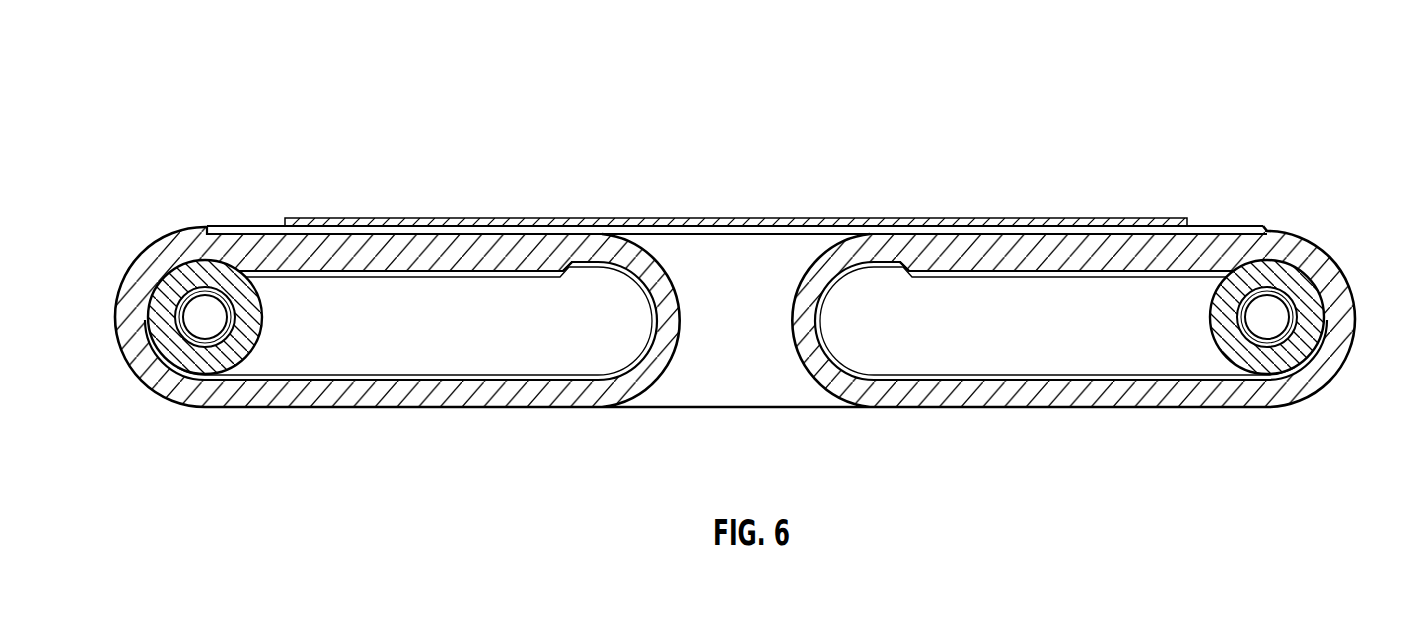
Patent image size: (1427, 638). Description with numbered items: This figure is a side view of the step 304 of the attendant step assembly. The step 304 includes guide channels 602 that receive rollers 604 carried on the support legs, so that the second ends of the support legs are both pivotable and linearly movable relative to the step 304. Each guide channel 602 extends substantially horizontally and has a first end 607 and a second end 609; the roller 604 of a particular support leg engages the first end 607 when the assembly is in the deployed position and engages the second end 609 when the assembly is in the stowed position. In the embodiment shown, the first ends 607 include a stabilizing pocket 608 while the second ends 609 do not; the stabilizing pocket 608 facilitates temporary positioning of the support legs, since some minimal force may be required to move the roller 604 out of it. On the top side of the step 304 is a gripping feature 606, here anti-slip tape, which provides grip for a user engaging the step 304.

The step 304 is at (167, 80).
The guide channel 602 is at (394, 362).
The roller 604 is at (188, 363).
The gripping feature 606 is at (305, 218).
The first end 607 is at (147, 317).
The stabilizing pocket 608 is at (600, 262).
The second end 609 is at (655, 320).